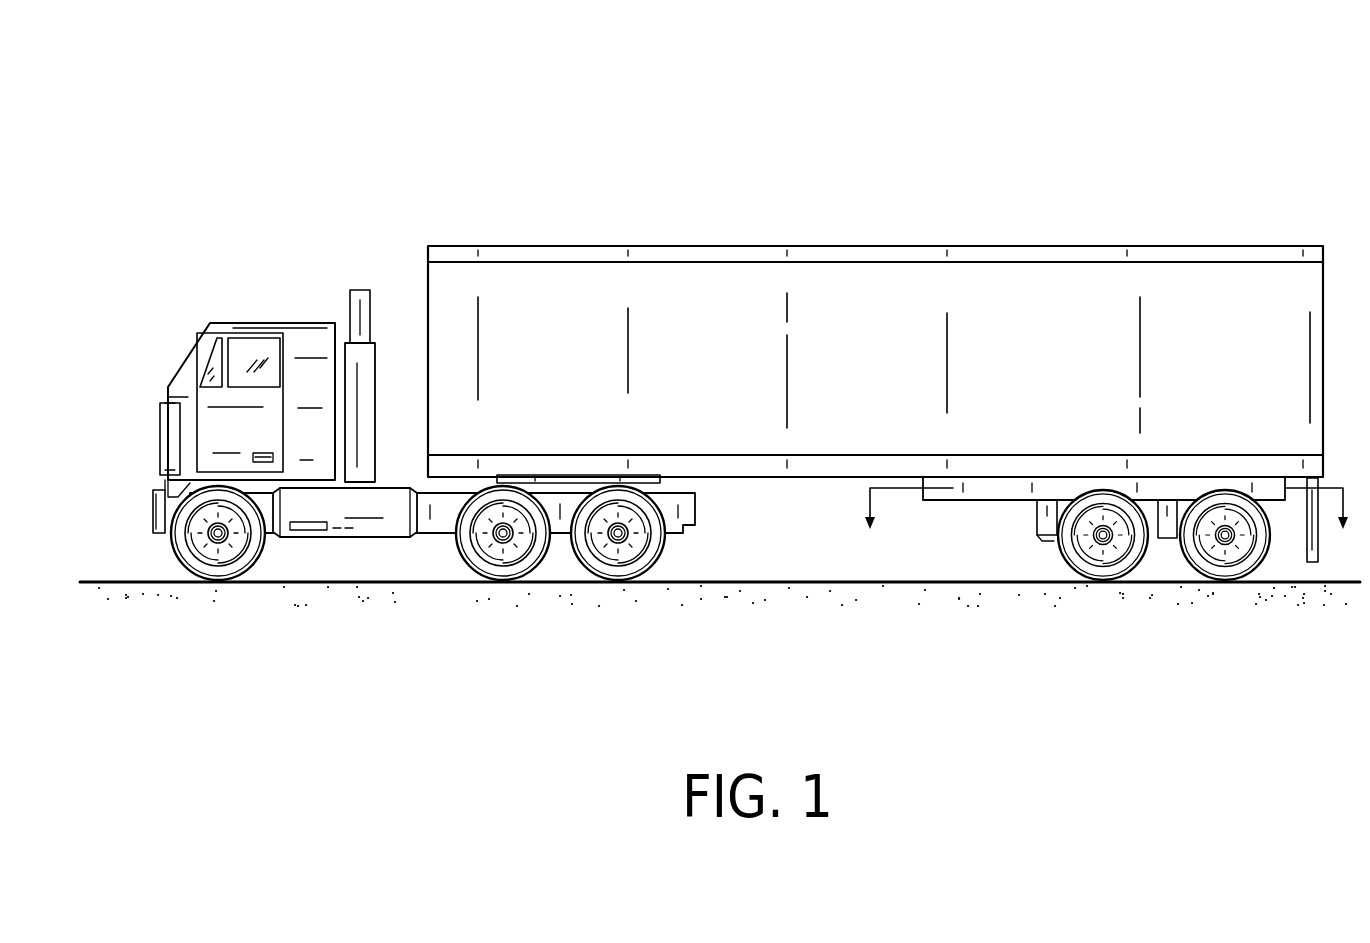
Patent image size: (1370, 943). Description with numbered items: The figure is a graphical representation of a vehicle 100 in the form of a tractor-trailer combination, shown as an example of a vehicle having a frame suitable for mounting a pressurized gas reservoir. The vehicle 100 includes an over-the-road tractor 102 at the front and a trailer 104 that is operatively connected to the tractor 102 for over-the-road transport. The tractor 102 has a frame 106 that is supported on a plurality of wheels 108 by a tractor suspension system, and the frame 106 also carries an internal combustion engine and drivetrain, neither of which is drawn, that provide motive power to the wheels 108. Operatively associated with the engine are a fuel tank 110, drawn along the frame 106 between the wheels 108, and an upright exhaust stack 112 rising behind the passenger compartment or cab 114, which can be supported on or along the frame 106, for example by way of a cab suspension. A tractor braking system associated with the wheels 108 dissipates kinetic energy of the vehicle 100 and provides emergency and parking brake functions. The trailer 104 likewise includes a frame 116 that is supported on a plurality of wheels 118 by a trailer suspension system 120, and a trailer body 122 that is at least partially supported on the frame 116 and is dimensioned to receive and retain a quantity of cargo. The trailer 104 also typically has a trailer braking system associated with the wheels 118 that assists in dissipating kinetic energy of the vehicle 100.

The vehicle 100 is at (398, 130).
The tractor 102 is at (132, 323).
The trailer 104 is at (572, 226).
The frame 106 is at (445, 522).
The wheels 108 is at (230, 572).
The fuel tank 110 is at (367, 540).
The exhaust stack 112 is at (362, 297).
The cab 114 is at (273, 322).
The frame 116 is at (988, 500).
The wheels 118 is at (1103, 579).
The trailer suspension system 120 is at (1044, 558).
The trailer body 122 is at (968, 290).